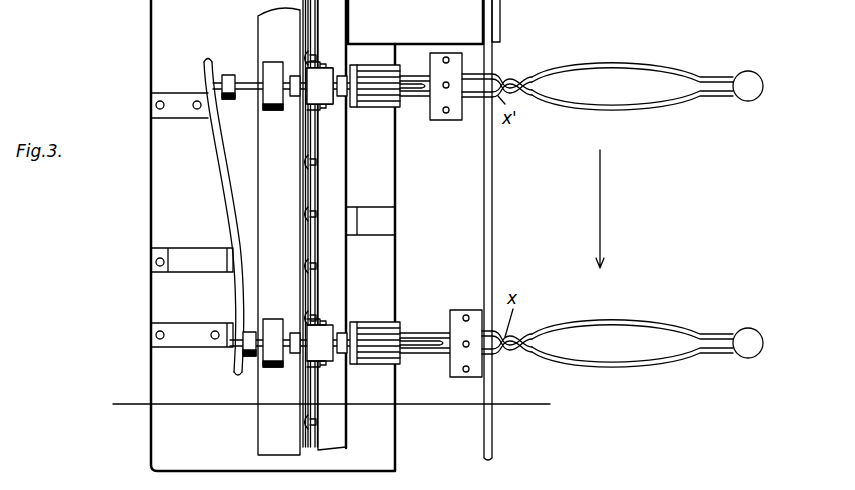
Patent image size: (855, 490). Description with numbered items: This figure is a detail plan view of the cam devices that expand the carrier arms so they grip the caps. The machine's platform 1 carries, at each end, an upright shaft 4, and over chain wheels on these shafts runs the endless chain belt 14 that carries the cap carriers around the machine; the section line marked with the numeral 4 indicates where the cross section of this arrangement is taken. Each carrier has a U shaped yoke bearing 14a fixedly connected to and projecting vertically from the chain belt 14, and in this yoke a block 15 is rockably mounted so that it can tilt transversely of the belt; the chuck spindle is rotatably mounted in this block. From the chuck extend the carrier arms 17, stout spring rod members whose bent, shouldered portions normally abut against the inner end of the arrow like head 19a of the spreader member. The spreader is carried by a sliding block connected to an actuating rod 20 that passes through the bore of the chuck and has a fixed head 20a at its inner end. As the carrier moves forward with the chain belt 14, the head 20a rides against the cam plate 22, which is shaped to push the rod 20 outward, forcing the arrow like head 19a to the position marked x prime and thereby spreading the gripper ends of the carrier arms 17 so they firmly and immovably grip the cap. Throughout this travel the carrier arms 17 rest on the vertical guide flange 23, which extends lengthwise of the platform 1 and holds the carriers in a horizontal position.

The platform 1 is at (161, 208).
The upright shaft 4 is at (330, 407).
The chain belt 14 is at (311, 185).
The U shaped yoke bearing 14a is at (329, 364).
The block 15 is at (328, 343).
The carrier arms 17 is at (641, 100).
The arrow like head 19a is at (501, 78).
The actuating rod 20 is at (248, 90).
The fixed head 20a is at (228, 73).
The cam plate 22 is at (226, 155).
The vertical guide flange 23 is at (494, 185).